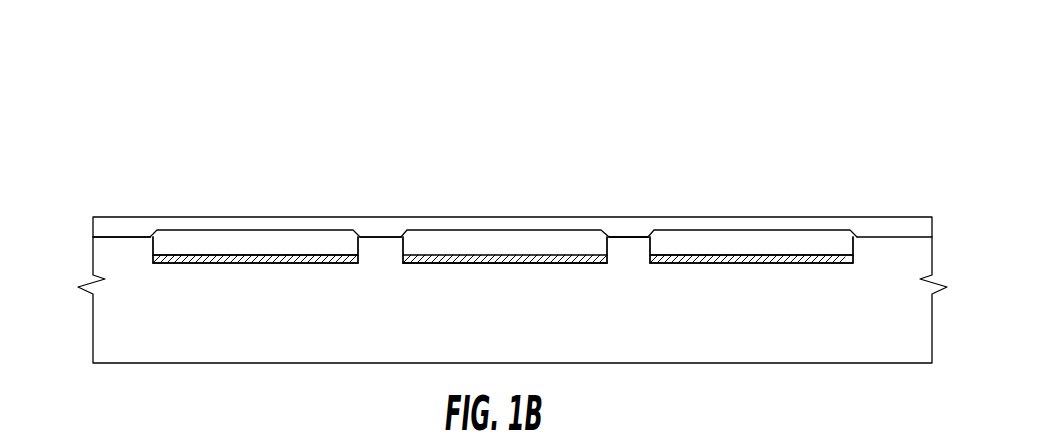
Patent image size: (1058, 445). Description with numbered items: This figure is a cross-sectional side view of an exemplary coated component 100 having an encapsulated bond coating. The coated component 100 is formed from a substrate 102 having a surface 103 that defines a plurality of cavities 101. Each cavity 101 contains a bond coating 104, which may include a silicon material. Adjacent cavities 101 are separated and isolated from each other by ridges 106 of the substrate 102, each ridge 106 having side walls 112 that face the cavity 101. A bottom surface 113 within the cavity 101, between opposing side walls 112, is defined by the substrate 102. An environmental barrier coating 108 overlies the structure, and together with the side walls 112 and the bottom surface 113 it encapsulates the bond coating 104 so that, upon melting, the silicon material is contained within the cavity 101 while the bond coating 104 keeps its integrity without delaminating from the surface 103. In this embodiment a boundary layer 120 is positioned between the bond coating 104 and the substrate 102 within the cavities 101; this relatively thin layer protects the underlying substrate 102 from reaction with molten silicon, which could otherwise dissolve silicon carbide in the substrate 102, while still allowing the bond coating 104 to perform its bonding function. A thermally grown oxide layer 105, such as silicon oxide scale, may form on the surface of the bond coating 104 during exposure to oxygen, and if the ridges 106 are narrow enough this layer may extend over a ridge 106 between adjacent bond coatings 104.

The coated component 100 is at (121, 121).
The cavity 101 is at (262, 246).
The substrate 102 is at (648, 338).
The surface 103 is at (645, 237).
The bond coating 104 is at (318, 245).
The thermally grown oxide layer 105 is at (215, 233).
The ridge 106 is at (122, 248).
The environmental barrier coating 108 is at (830, 223).
The side wall 112 is at (160, 244).
The bottom surface 113 is at (495, 249).
The boundary layer 120 is at (282, 263).